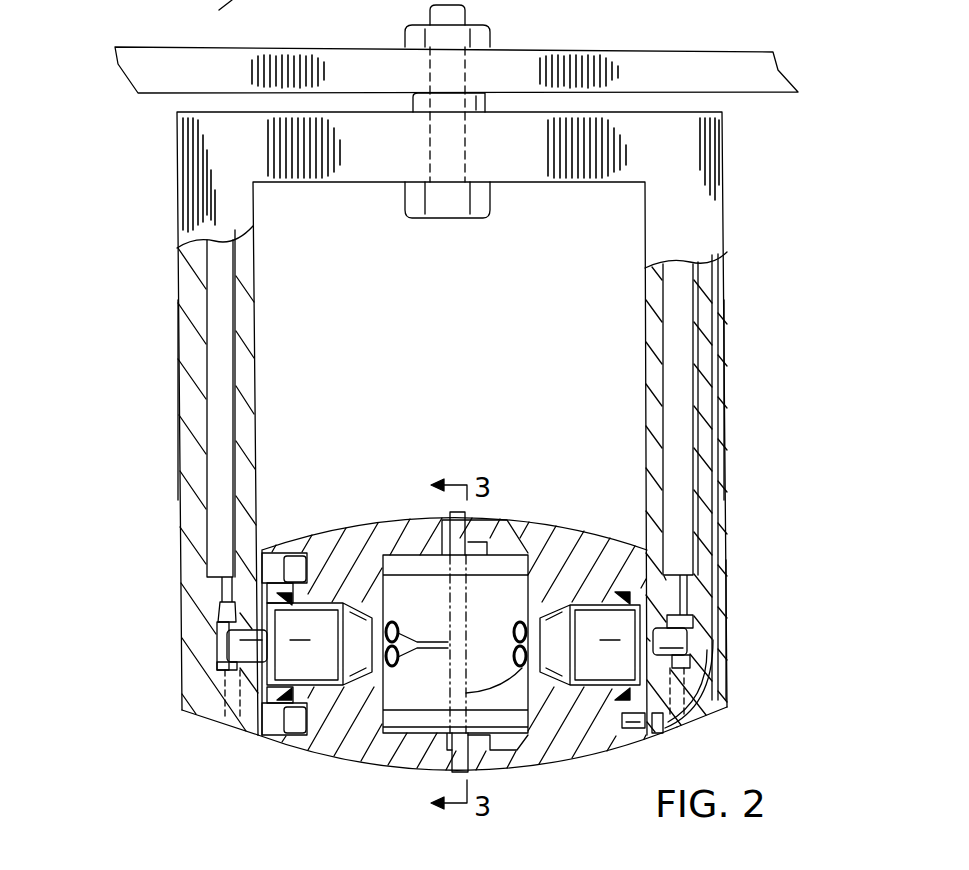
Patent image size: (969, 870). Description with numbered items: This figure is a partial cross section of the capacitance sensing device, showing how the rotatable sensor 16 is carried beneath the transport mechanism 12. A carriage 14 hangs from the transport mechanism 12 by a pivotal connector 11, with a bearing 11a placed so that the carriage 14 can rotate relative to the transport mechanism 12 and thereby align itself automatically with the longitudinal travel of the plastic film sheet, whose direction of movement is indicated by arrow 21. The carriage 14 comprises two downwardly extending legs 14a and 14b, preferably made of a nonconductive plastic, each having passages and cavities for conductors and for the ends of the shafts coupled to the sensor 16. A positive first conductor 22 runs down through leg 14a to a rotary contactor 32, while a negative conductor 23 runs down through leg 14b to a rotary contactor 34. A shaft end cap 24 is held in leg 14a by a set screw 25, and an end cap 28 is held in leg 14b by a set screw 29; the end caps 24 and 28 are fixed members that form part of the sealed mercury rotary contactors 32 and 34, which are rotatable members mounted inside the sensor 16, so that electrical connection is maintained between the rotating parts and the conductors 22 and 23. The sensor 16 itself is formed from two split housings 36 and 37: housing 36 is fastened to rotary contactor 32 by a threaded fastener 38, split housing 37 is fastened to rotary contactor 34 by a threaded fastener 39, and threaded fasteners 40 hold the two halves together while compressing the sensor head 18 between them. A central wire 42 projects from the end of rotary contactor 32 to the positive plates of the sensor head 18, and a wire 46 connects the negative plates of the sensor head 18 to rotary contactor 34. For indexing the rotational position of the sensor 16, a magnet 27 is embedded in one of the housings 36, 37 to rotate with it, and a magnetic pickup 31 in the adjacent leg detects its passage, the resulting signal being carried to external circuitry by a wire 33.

The pivotal connector 11 is at (503, 28).
The bearing 11a is at (408, 104).
The transport mechanism 12 is at (640, 65).
The carriage 14 is at (550, 189).
The leg 14a is at (176, 214).
The leg 14b is at (724, 208).
The sensor 16 is at (378, 508).
The sensor head 18 is at (452, 516).
The arrow 21 is at (237, 3).
The first conductor 22 is at (206, 408).
The negative conductor 23 is at (699, 395).
The shaft end cap 24 is at (224, 632).
The set screw 25 is at (214, 665).
The magnet 27 is at (640, 730).
The end cap 28 is at (689, 631).
The set screw 29 is at (700, 662).
The magnetic pickup 31 is at (656, 724).
The rotary contactor 32 is at (318, 652).
The wire 33 is at (724, 612).
The rotary contactor 34 is at (621, 652).
The housing 36 is at (340, 528).
The split housing 37 is at (548, 523).
The threaded fastener 38 is at (393, 620).
The threaded fastener 39 is at (520, 619).
The threaded fasteners 40 is at (288, 570).
The central wire 42 is at (430, 652).
The wire 46 is at (477, 690).